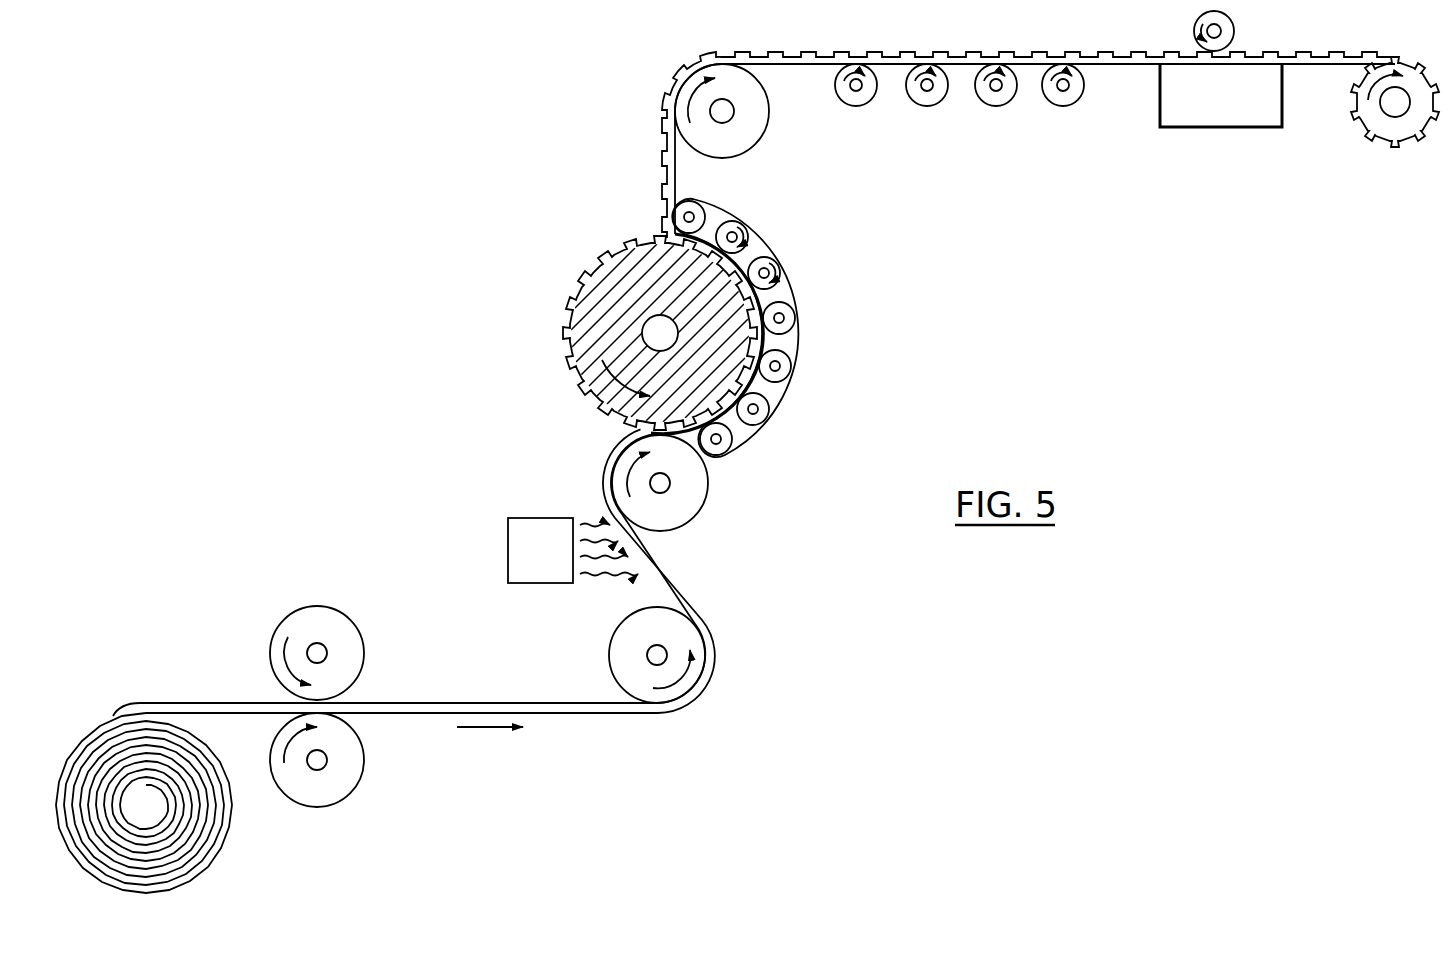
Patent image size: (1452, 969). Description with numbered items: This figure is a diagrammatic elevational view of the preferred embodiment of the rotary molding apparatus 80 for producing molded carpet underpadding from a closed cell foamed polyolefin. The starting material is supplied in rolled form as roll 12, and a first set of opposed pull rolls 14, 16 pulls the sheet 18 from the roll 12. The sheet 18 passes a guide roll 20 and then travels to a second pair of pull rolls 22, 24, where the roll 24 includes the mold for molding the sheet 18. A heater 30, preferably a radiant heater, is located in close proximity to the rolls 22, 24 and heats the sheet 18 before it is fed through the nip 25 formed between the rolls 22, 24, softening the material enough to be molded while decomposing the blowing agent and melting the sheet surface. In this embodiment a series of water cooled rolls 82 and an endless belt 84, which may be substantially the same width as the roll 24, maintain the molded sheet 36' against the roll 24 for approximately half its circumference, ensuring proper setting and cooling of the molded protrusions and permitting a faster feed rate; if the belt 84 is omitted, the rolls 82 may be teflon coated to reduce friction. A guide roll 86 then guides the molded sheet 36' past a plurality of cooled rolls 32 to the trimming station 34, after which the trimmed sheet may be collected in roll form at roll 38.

The roll 12 is at (118, 714).
The pull roll 14 is at (350, 643).
The pull roll 16 is at (354, 752).
The sheet 18 is at (233, 706).
The guide roll 20 is at (612, 657).
The pull roll 22 is at (692, 500).
The roll 24 is at (583, 360).
The nip 25 is at (606, 435).
The heater 30 is at (508, 545).
The cooled rolls 32 is at (919, 98).
The trimming station 34 is at (1177, 113).
The molded sheet 36' is at (1117, 32).
The roll 38 is at (1373, 118).
The rotary molding apparatus 80 is at (517, 122).
The water cooled rolls 82 is at (730, 233).
The endless belt 84 is at (753, 442).
The guide roll 86 is at (748, 138).